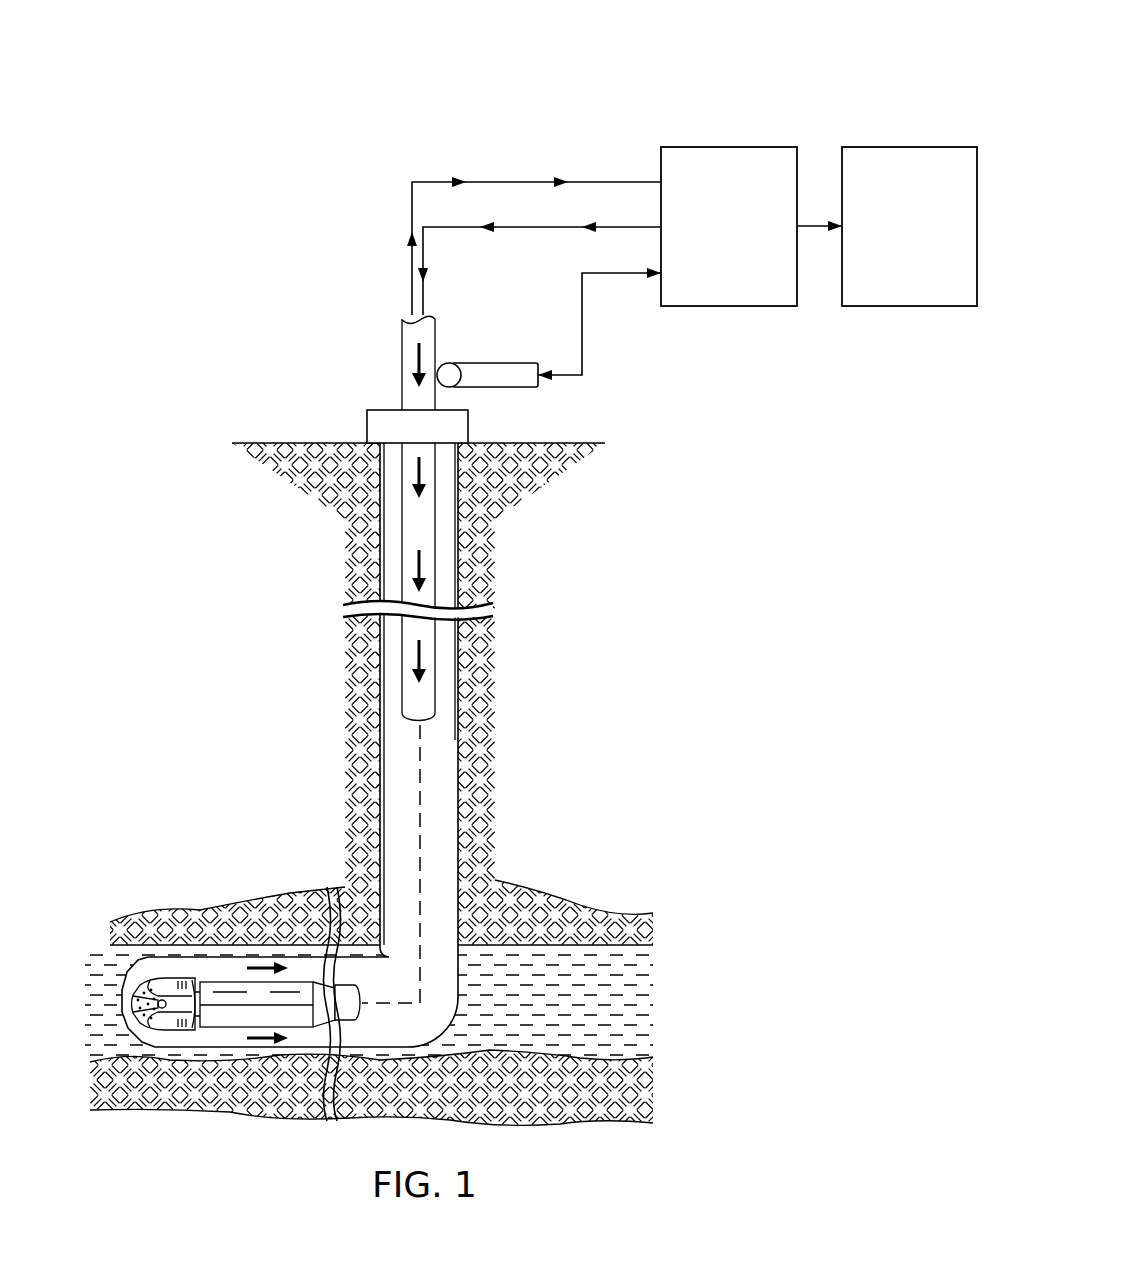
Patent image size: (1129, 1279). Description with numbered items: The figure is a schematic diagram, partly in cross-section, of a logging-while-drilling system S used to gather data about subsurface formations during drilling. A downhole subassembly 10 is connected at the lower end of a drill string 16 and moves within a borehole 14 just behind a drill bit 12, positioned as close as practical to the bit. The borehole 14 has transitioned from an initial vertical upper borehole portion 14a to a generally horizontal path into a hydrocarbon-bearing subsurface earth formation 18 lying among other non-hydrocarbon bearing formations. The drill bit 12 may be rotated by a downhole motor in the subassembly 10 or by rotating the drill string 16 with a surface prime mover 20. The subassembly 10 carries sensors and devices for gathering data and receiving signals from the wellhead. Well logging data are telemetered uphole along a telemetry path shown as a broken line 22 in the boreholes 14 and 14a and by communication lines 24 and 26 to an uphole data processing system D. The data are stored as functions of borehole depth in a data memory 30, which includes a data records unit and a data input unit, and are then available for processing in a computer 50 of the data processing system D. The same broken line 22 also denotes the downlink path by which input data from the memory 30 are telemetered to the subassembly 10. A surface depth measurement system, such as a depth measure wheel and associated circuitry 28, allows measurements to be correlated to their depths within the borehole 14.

The downhole subassembly 10 is at (222, 968).
The drill bit 12 is at (163, 965).
The borehole 14 is at (212, 1035).
The upper borehole portion 14a is at (412, 532).
The drill string 16 is at (447, 677).
The subsurface earth formation 18 is at (289, 884).
The surface prime mover 20 is at (367, 427).
The broken line 22 is at (422, 778).
The communication line 24 is at (507, 181).
The communication line 26 is at (532, 229).
The depth measure wheel and associated circuitry 28 is at (490, 363).
The data memory 30 is at (727, 147).
The computer 50 is at (909, 147).
The data processing system D is at (850, 70).
The logging-while-drilling system S is at (526, 740).